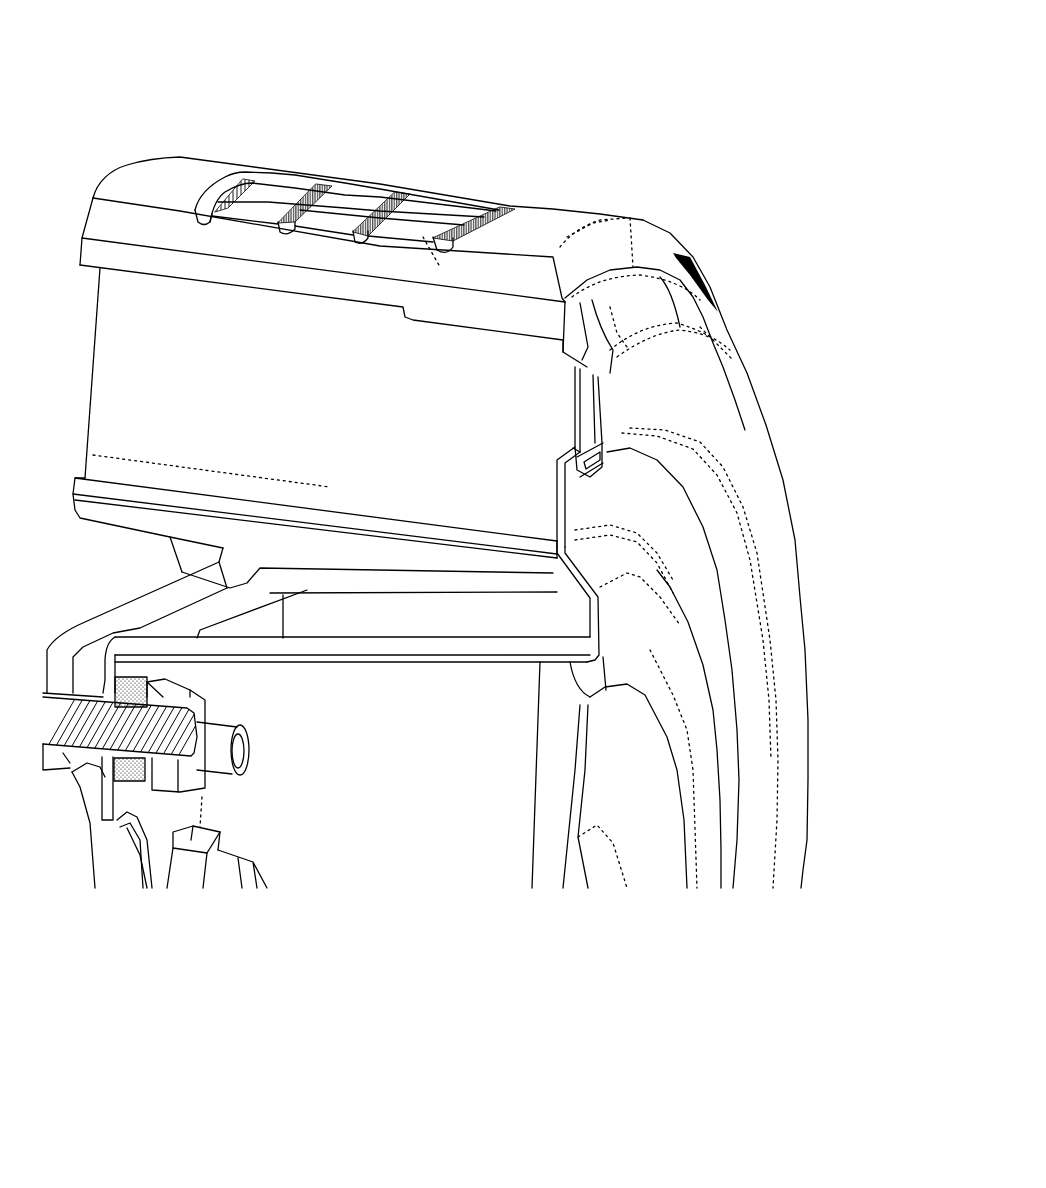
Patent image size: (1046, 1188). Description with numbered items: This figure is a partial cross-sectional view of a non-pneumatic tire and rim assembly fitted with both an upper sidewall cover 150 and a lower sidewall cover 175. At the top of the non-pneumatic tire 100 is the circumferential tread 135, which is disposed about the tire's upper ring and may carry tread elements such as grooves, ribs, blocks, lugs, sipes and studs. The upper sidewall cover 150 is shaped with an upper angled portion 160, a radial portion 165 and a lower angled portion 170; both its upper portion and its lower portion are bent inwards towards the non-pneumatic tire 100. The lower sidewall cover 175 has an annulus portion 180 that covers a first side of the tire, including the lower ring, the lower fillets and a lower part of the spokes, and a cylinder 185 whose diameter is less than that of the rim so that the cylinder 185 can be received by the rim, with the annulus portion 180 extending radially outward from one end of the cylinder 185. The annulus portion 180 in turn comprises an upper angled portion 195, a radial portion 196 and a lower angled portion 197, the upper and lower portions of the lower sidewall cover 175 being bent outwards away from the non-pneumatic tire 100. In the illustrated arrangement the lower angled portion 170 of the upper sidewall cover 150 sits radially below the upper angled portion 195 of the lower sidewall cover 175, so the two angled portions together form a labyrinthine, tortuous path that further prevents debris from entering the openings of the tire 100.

The non-pneumatic tire 100 is at (76, 66).
The circumferential tread 135 is at (243, 170).
The upper sidewall cover 150 is at (834, 428).
The upper angled portion 160 is at (700, 320).
The radial portion 165 is at (772, 570).
The lower angled portion 170 is at (592, 460).
The lower sidewall cover 175 is at (836, 702).
The annulus portion 180 is at (836, 813).
The cylinder 185 is at (408, 663).
The upper angled portion 195 is at (577, 452).
The radial portion 196 is at (563, 503).
The lower angled portion 197 is at (572, 570).